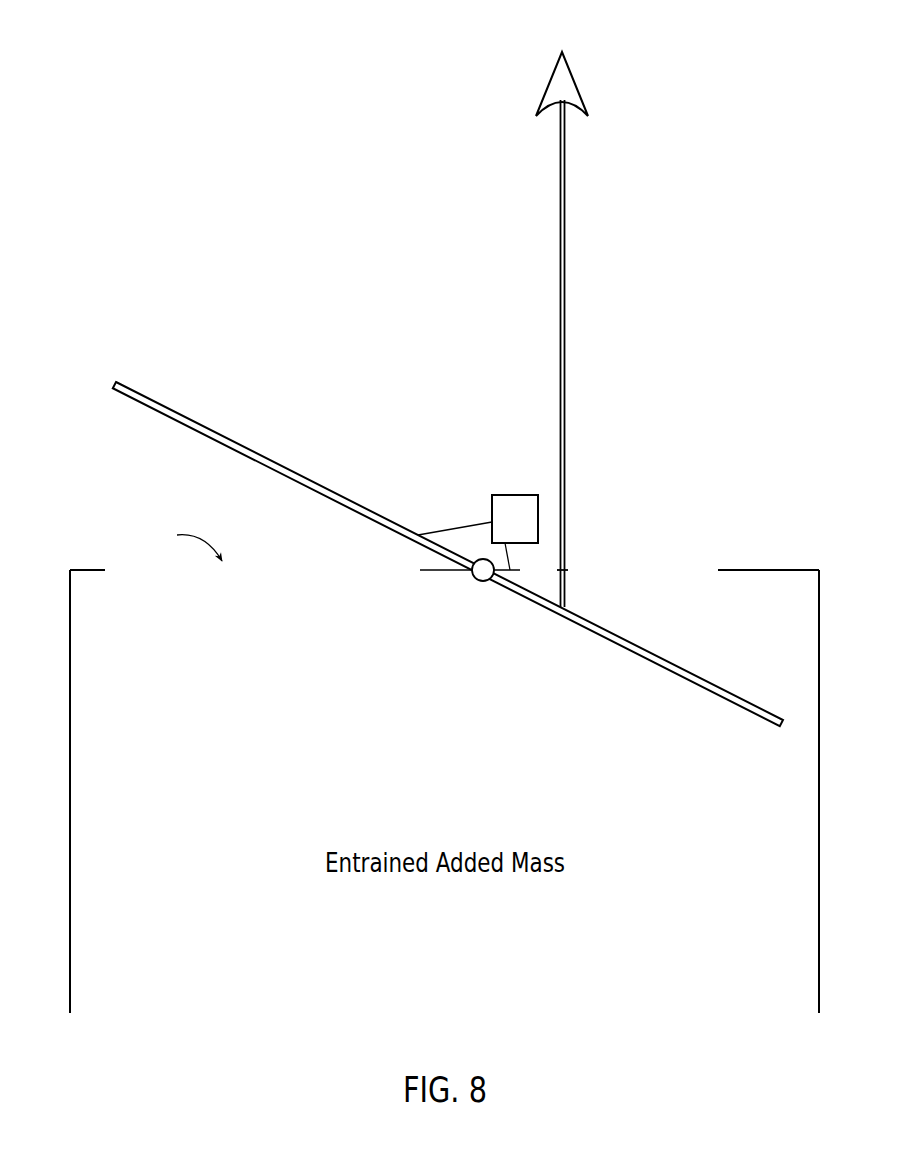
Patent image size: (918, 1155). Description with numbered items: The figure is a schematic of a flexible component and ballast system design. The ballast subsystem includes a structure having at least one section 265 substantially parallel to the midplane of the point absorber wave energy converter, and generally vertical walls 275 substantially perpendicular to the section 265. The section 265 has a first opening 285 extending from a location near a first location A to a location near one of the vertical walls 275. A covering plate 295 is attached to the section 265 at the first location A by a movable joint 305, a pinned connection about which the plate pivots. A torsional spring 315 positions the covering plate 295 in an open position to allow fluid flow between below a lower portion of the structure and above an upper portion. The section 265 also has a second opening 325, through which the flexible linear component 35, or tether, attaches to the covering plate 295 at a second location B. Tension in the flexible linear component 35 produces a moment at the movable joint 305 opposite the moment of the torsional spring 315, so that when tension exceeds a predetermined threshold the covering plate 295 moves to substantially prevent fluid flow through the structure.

The flexible linear component 35 is at (560, 203).
The section 265 is at (90, 570).
The vertical walls 275 is at (70, 742).
The first opening 285 is at (178, 540).
The covering plate 295 is at (166, 406).
The movable joint 305 is at (474, 586).
The torsional spring 315 is at (517, 495).
The second opening 325 is at (569, 564).